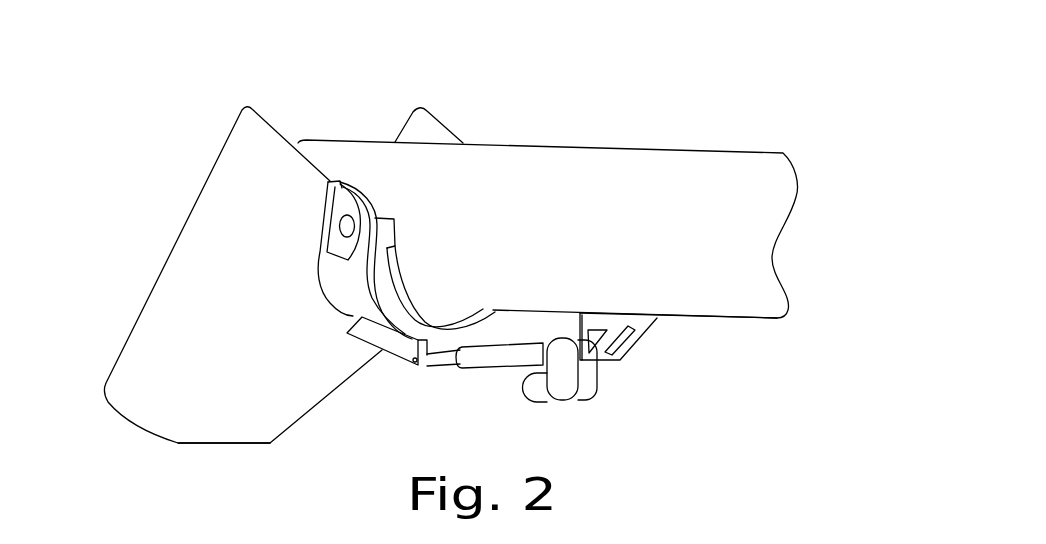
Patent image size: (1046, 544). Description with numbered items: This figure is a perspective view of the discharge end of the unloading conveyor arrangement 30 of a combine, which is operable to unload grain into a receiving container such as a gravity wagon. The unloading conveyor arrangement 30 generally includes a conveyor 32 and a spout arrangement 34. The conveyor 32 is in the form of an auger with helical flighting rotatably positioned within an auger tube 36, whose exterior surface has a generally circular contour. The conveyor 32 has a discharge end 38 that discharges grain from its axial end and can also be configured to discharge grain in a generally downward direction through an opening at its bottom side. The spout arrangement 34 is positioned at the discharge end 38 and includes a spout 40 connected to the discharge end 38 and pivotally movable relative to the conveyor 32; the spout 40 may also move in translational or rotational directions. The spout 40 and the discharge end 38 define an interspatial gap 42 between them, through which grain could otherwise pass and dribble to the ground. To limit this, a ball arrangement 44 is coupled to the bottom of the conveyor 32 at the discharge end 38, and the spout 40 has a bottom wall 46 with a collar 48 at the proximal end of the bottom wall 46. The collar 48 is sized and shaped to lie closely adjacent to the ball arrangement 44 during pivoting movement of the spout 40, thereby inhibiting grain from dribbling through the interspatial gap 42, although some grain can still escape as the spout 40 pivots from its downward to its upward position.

The unloading conveyor arrangement 30 is at (546, 104).
The conveyor 32 is at (737, 137).
The spout arrangement 34 is at (153, 188).
The auger tube 36 is at (723, 318).
The discharge end 38 is at (353, 139).
The spout 40 is at (243, 443).
The interspatial gap 42 is at (437, 344).
The ball arrangement 44 is at (413, 287).
The bottom wall 46 is at (303, 377).
The collar 48 is at (343, 276).